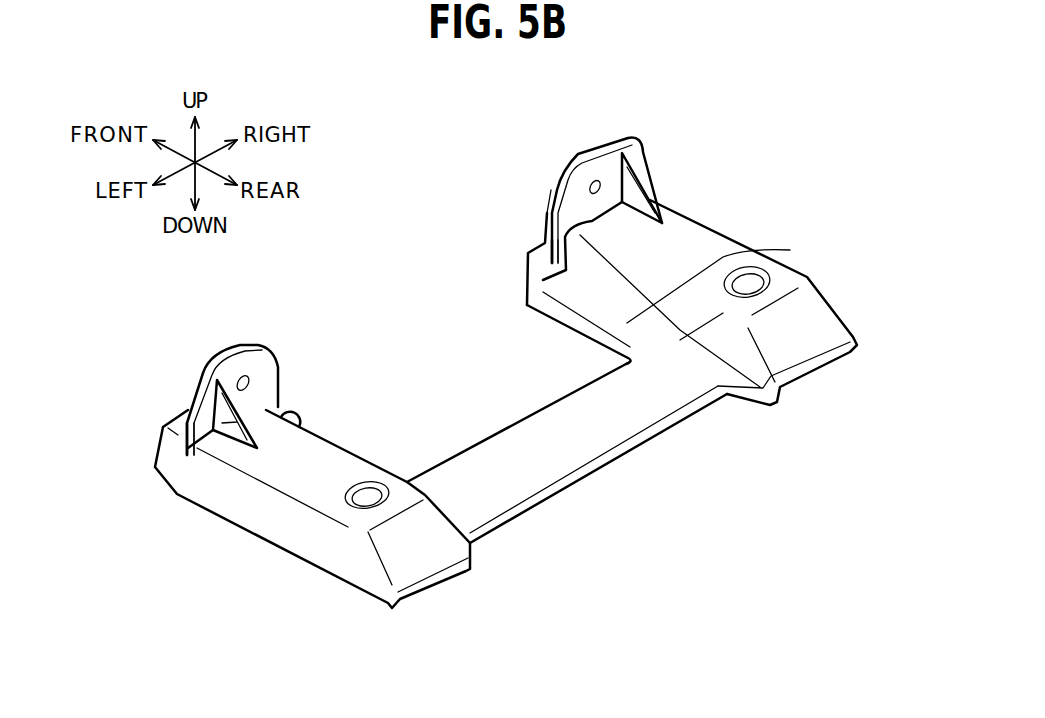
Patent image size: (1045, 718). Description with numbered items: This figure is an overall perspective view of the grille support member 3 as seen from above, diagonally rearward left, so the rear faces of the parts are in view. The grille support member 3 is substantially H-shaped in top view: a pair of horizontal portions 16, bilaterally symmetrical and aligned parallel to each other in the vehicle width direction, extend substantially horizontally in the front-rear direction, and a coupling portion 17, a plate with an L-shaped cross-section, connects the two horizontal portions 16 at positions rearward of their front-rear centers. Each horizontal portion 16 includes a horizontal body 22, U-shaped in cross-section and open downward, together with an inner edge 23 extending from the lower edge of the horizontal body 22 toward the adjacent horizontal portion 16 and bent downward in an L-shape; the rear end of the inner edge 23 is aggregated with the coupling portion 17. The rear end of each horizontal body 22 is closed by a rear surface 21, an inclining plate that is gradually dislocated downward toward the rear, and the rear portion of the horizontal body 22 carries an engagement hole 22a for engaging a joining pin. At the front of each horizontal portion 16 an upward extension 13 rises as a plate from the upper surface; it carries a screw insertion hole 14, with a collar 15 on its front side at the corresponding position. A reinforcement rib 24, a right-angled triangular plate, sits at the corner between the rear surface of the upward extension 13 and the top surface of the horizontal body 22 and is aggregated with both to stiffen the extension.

The grille support member 3 is at (420, 244).
The upward extension 13 is at (207, 410).
The screw insertion hole 14 is at (235, 382).
The collar 15 is at (222, 356).
The horizontal portion 16 is at (227, 503).
The coupling portion 17 is at (572, 452).
The rear surface 21 is at (417, 560).
The horizontal body 22 is at (687, 247).
The engagement hole 22a is at (355, 500).
The inner edge 23 is at (750, 278).
The reinforcement rib 24 is at (250, 379).